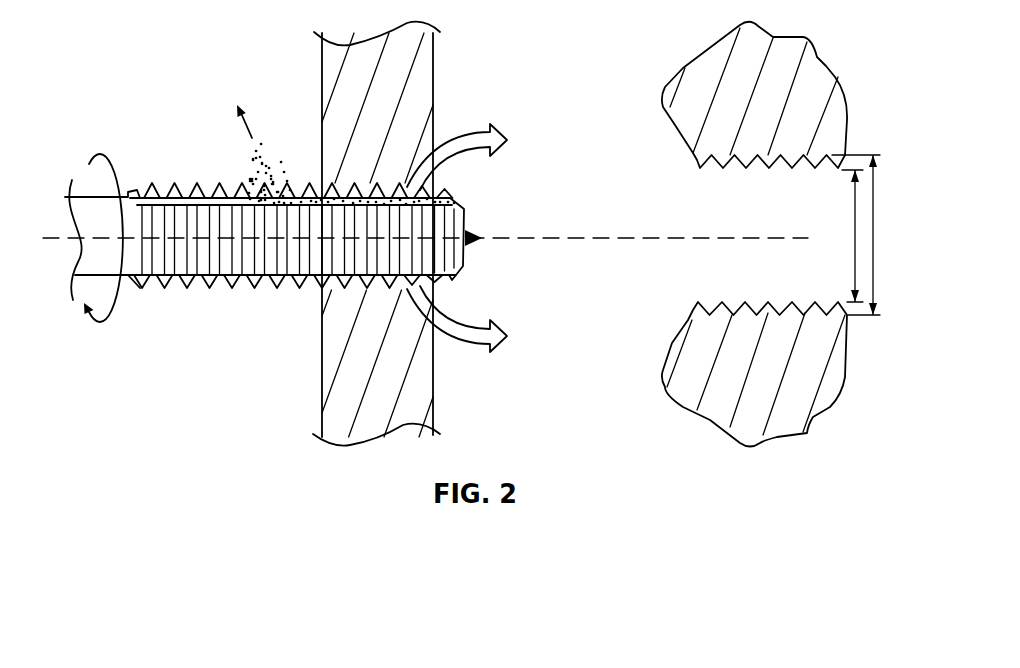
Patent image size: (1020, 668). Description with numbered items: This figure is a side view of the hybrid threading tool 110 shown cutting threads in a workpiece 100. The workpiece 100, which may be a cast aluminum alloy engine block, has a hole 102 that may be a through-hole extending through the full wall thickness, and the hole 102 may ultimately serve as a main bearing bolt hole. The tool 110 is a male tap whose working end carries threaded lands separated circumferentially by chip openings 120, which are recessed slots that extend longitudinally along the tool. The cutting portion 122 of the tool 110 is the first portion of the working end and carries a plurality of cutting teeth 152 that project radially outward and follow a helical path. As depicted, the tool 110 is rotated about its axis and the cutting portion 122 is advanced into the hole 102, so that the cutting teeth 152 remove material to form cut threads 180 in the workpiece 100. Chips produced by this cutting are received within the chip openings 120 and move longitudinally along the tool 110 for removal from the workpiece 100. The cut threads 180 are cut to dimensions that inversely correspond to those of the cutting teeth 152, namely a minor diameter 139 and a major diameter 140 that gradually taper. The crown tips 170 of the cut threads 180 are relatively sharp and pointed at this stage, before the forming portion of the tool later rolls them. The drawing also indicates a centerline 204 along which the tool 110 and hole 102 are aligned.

The workpiece 100 is at (330, 58).
The hole 102 is at (412, 221).
The hybrid threading tool 110 is at (84, 190).
The chip openings 120 is at (243, 197).
The cutting portion 122 is at (373, 223).
The cutting teeth 152 is at (385, 284).
The crown tips 170 is at (722, 302).
The cut threads 180 is at (770, 192).
The screw axis 204 is at (703, 233).
The minor diameter 139 is at (853, 263).
The major diameter 140 is at (876, 240).